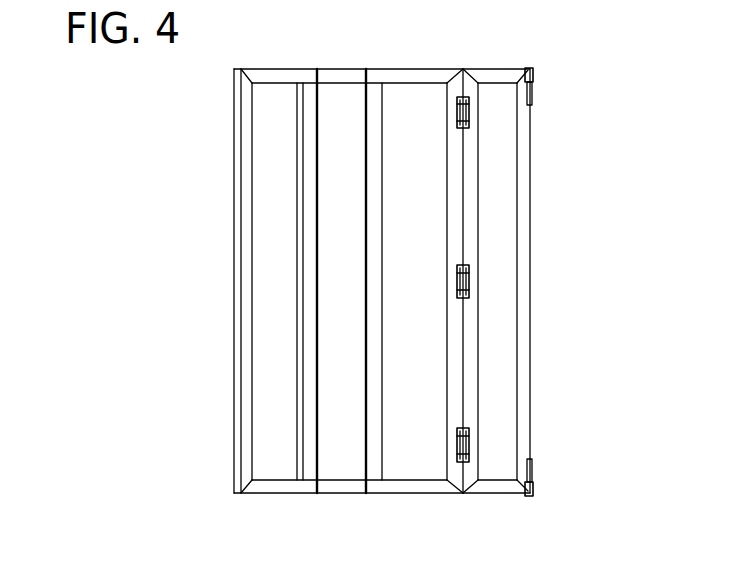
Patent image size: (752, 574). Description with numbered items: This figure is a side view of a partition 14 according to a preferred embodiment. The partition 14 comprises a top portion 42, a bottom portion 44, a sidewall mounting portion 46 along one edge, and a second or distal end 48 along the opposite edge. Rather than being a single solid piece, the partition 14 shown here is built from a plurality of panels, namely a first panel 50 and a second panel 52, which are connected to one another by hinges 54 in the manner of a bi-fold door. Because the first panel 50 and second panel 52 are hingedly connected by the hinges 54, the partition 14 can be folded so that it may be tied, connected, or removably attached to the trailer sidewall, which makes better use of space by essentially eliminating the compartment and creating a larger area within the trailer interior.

The partition 14 is at (267, 408).
The top portion 42 is at (300, 69).
The bottom portion 44 is at (265, 497).
The sidewall mounting portion 46 is at (237, 322).
The distal end 48 is at (523, 299).
The first panel 50 is at (393, 73).
The second panel 52 is at (512, 173).
The hinges 54 is at (467, 113).